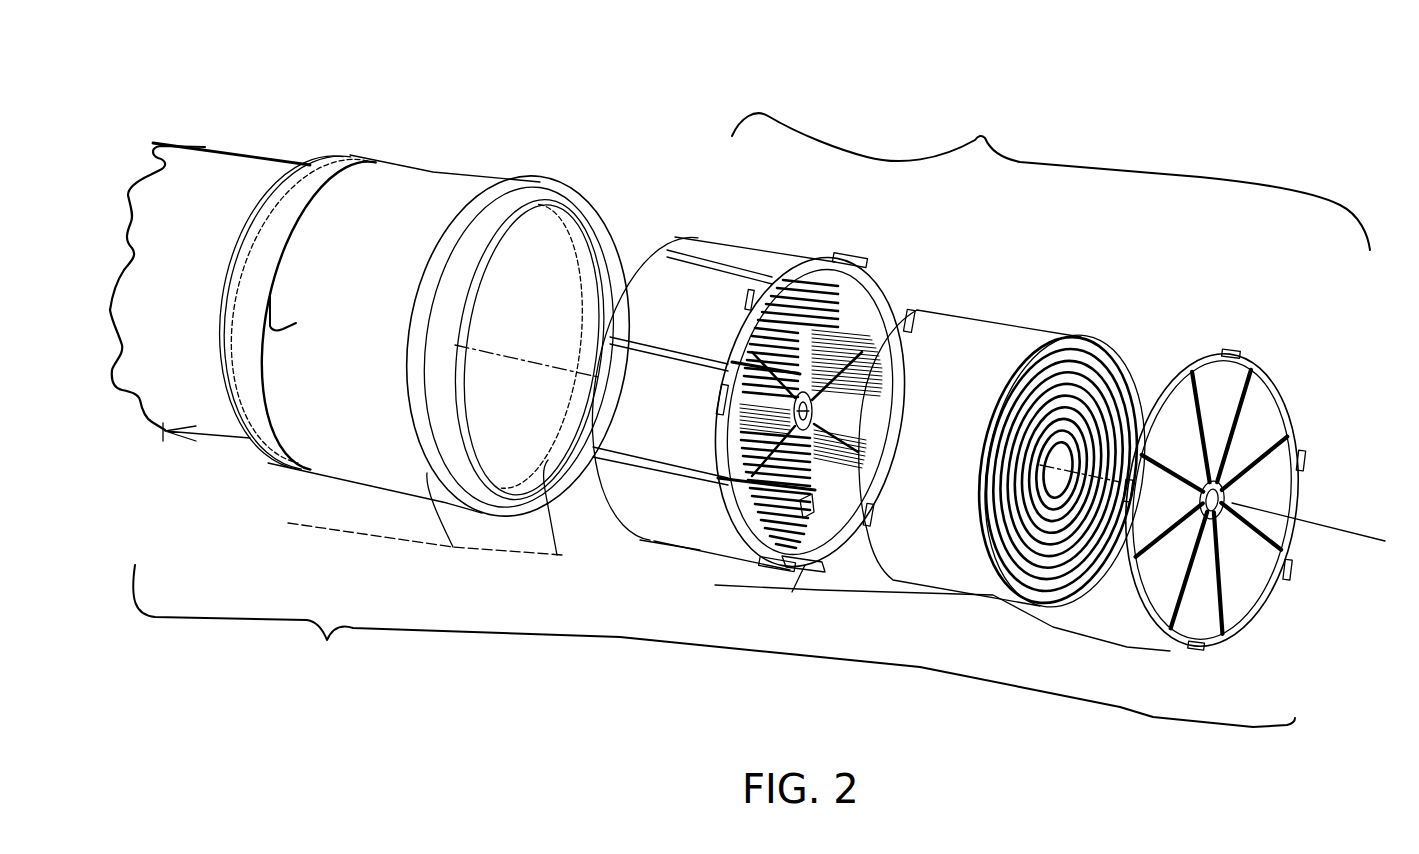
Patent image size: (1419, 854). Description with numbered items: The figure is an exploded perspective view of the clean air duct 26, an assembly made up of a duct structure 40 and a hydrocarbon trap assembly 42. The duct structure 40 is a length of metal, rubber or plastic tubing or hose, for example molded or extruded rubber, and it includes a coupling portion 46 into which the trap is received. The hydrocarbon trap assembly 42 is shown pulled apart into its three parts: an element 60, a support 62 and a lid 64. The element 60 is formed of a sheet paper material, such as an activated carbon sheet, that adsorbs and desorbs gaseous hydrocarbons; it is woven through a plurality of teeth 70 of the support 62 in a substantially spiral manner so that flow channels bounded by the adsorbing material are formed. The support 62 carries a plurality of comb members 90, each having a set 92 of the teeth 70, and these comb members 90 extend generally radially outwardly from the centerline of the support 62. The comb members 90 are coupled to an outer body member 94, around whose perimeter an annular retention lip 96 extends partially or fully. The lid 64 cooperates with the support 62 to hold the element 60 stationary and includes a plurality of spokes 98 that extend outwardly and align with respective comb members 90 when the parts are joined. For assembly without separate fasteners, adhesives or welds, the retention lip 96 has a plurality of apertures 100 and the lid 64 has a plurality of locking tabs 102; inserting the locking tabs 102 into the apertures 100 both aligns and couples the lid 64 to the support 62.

The clean air duct 26 is at (714, 593).
The duct structure 40 is at (315, 120).
The hydrocarbon trap assembly 42 is at (1051, 166).
The coupling portion 46 is at (438, 168).
The element 60 is at (993, 313).
The support 62 is at (753, 238).
The lid 64 is at (1242, 344).
The teeth 70 is at (823, 520).
The comb members 90 is at (859, 330).
The set of teeth 92 is at (815, 408).
The outer body member 94 is at (672, 522).
The annular retention lip 96 is at (723, 460).
The spokes 98 is at (1278, 462).
The apertures 100 is at (735, 533).
The locking tabs 102 is at (1303, 487).